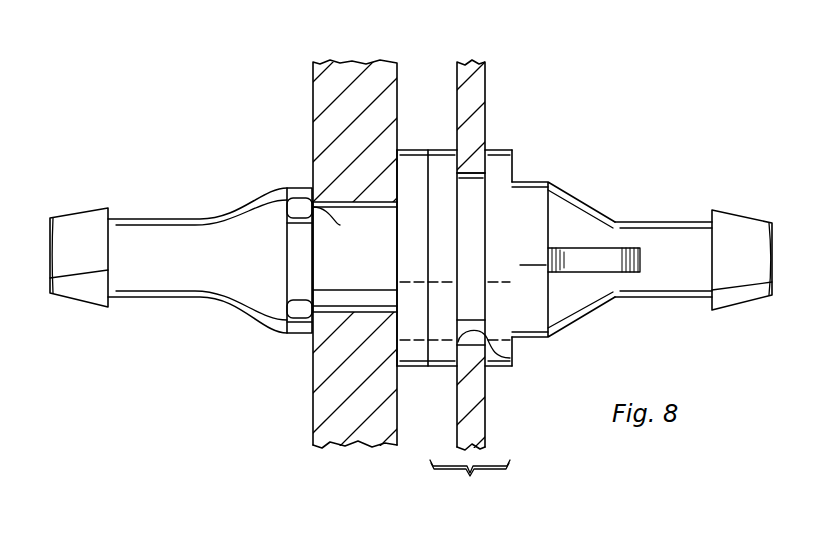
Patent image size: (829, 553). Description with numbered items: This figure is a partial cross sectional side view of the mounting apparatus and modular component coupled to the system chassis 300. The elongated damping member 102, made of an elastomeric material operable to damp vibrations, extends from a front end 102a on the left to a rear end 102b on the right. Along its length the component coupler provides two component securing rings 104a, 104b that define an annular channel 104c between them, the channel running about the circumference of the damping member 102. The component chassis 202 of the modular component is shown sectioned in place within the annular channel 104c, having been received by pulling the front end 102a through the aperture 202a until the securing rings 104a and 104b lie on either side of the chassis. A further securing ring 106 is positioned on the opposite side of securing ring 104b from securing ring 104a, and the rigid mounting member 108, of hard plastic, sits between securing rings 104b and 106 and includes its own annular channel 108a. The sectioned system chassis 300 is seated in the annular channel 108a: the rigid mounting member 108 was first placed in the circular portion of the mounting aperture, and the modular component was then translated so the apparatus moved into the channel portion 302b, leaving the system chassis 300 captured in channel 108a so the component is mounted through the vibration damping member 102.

The damping member 102 is at (190, 218).
The front end 102a is at (80, 212).
The rear end 102b is at (745, 210).
The component securing ring 104a is at (302, 188).
The component securing ring 104b is at (413, 150).
The annular channel 104c is at (385, 265).
The securing ring 106 is at (529, 182).
The rigid mounting member 108 is at (470, 484).
The annular channel 108a is at (470, 162).
The component chassis 202 is at (313, 102).
The aperture 202a is at (312, 222).
The system chassis 300 is at (485, 408).
The channel portion 302b is at (510, 358).